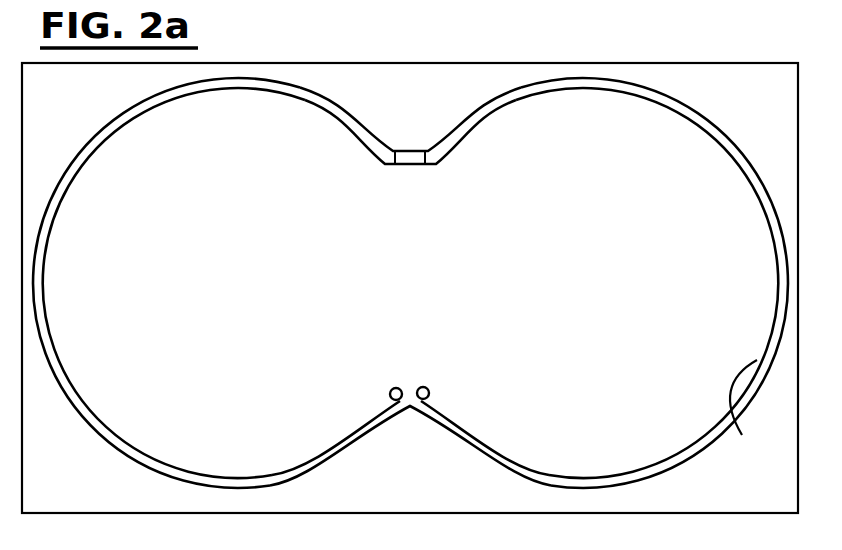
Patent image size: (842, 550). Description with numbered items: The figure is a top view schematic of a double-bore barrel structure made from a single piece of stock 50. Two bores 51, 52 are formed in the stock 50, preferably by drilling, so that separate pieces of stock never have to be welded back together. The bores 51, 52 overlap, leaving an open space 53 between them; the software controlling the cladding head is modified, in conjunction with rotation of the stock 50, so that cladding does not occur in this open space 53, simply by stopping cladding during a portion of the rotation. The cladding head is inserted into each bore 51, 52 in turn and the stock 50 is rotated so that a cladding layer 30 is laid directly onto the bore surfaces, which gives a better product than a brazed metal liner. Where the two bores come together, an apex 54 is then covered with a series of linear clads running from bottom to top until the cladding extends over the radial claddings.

The stock 50 is at (410, 271).
The bore 51 is at (253, 289).
The bore 52 is at (612, 220).
The open space 53 is at (406, 276).
The apex 54 is at (393, 149).
The cladding layer 30 is at (756, 409).